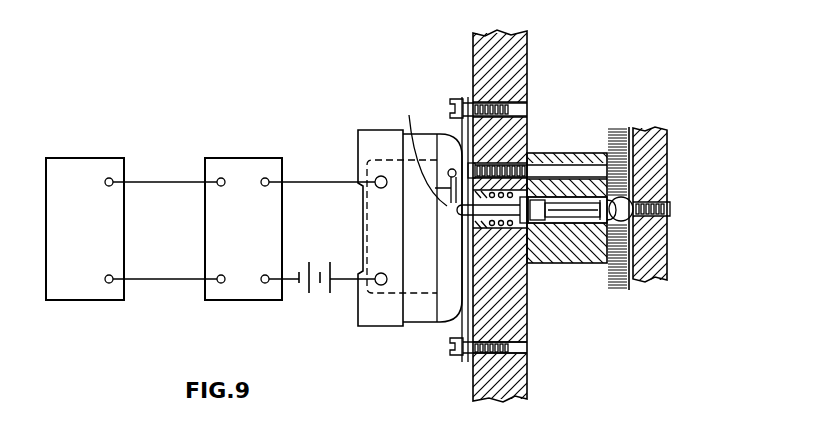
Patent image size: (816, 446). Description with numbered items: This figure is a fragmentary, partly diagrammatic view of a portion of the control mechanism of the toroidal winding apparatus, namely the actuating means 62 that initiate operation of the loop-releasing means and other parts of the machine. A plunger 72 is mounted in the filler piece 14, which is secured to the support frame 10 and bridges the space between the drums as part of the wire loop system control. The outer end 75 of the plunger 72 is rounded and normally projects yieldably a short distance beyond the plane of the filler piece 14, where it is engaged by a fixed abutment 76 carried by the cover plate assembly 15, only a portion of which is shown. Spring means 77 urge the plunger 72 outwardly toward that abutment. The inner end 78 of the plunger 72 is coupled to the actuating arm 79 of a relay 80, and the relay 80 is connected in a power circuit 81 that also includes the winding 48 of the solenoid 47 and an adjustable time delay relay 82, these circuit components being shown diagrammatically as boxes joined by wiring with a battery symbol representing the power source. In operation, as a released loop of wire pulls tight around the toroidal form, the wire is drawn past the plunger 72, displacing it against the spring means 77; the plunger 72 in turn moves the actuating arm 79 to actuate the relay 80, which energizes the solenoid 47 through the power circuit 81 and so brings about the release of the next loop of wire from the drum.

The support frame 10 is at (473, 50).
The filler plate 14 is at (593, 264).
The cover plate assembly 15 is at (670, 167).
The solenoid 47 is at (104, 155).
The winding 48 is at (62, 168).
The actuating means 62 is at (632, 104).
The plunger 72 is at (577, 184).
The outer end 75 is at (608, 228).
The fixed abutment 76 is at (627, 214).
The spring means 77 is at (508, 172).
The inner end 78 is at (494, 210).
The actuating arm 79 is at (432, 229).
The relay 80 is at (382, 135).
The power circuit 81 is at (296, 296).
The adjustable time delay relay 82 is at (230, 163).